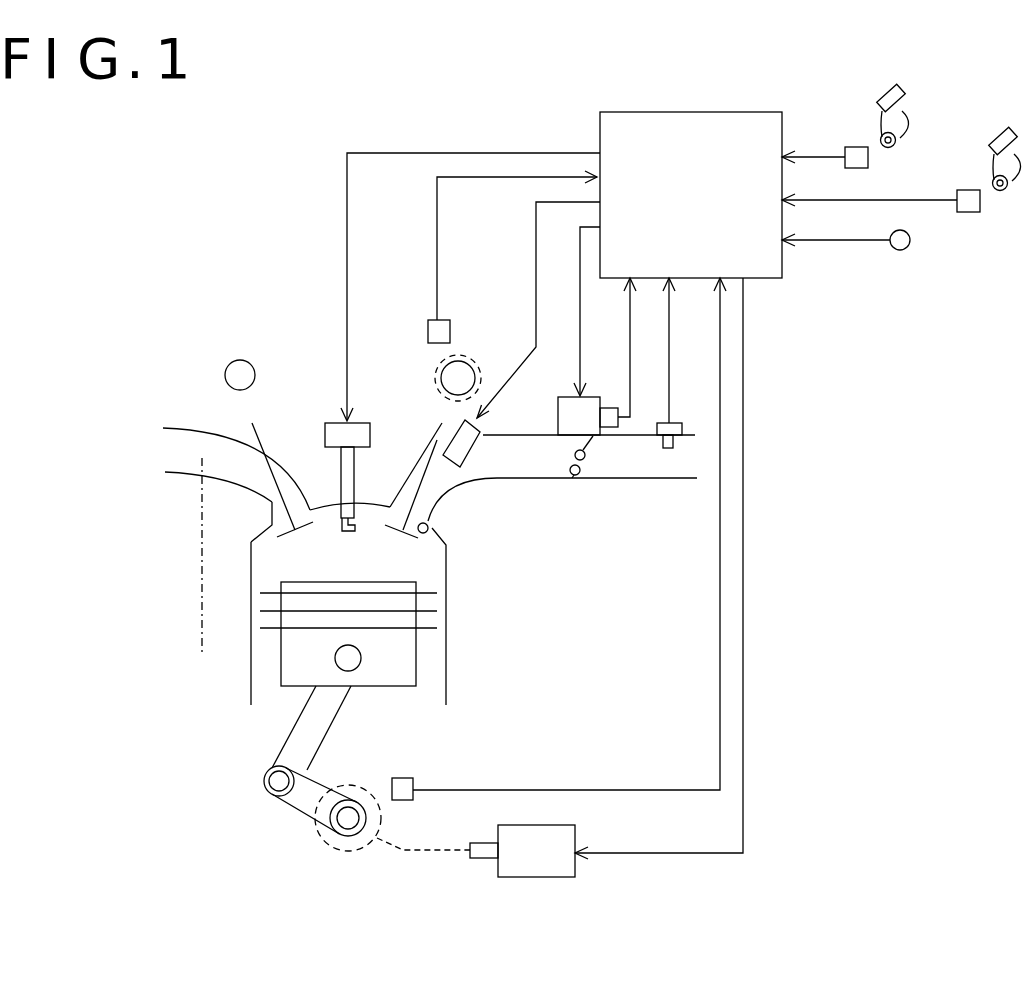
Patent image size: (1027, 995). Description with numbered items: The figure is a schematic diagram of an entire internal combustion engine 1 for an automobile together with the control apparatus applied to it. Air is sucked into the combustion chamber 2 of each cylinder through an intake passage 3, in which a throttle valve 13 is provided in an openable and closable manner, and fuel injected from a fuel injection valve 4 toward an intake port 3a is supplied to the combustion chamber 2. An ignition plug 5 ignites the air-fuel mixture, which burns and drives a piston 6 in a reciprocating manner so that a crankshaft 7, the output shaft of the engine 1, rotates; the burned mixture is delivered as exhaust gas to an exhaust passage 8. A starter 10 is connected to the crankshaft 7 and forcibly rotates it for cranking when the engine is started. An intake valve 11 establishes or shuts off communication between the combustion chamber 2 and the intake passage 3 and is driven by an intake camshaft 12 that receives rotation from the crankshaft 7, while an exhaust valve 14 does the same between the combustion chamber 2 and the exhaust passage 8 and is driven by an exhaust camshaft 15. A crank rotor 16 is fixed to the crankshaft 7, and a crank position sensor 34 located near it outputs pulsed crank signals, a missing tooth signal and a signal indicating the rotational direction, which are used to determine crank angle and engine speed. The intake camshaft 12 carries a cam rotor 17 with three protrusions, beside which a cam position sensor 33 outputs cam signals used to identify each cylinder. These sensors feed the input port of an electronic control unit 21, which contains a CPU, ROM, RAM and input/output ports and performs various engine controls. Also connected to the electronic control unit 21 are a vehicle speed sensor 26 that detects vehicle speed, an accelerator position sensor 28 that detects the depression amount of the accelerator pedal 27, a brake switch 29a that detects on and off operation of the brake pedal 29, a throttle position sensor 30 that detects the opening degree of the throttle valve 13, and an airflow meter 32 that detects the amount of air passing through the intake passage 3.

The internal combustion engine 1 is at (203, 612).
The combustion chamber 2 is at (265, 560).
The intake passage 3 is at (521, 481).
The intake port 3a is at (433, 528).
The fuel injection valve 4 is at (471, 449).
The ignition plug 5 is at (341, 470).
The piston 6 is at (391, 687).
The crankshaft 7 is at (352, 802).
The exhaust passage 8 is at (193, 470).
The starter 10 is at (576, 826).
The intake valve 11 is at (425, 488).
The intake camshaft 12 is at (459, 360).
The throttle valve 13 is at (577, 477).
The exhaust valve 14 is at (267, 500).
The exhaust camshaft 15 is at (240, 360).
The crank rotor 16 is at (318, 848).
The cam rotor 17 is at (481, 378).
The electronic control unit 21 is at (693, 112).
The vehicle speed sensor 26 is at (910, 240).
The accelerator pedal 27 is at (883, 96).
The accelerator position sensor 28 is at (857, 147).
The brake pedal 29 is at (996, 140).
The brake switch 29a is at (967, 190).
The throttle position sensor 30 is at (613, 400).
The airflow meter 32 is at (683, 423).
The cam position sensor 33 is at (447, 319).
The crank position sensor 34 is at (407, 778).